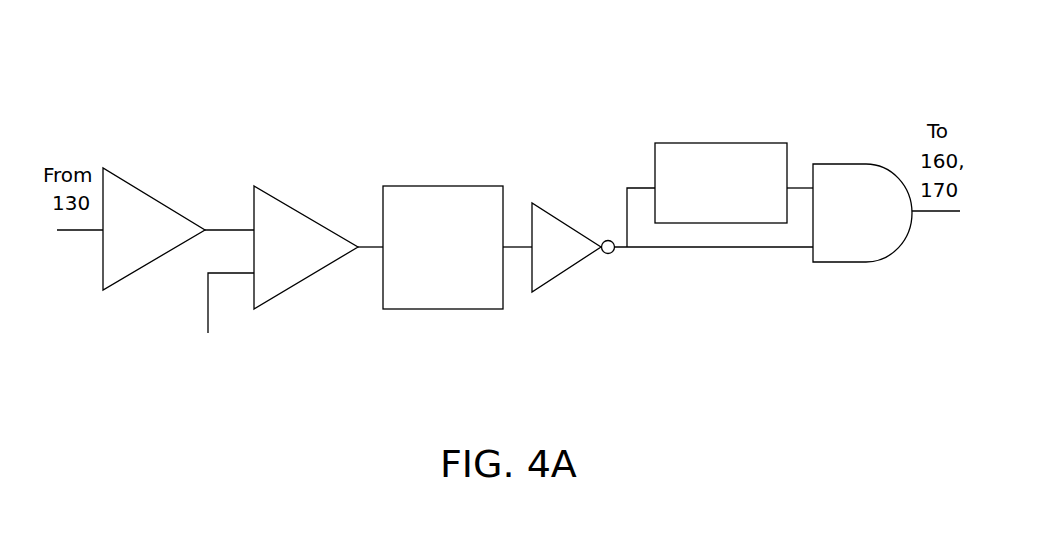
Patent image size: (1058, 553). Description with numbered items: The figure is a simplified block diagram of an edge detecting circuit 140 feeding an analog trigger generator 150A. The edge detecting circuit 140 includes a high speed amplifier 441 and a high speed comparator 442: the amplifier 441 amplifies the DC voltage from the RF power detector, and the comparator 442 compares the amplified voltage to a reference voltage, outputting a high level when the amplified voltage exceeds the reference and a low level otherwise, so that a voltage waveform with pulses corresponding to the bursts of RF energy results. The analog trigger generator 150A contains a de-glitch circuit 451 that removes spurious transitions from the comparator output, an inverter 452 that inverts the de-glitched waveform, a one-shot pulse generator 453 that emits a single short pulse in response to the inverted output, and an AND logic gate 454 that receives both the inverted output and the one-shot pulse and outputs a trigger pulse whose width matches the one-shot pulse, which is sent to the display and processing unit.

The edge detecting circuit 140 is at (233, 191).
The analog trigger generator 150A is at (657, 172).
The high speed amplifier 441 is at (156, 203).
The high speed comparator 442 is at (309, 223).
The de-glitch circuit 451 is at (448, 212).
The inverter 452 is at (580, 218).
The one-shot pulse generator 453 is at (738, 148).
The AND logic gate 454 is at (841, 251).